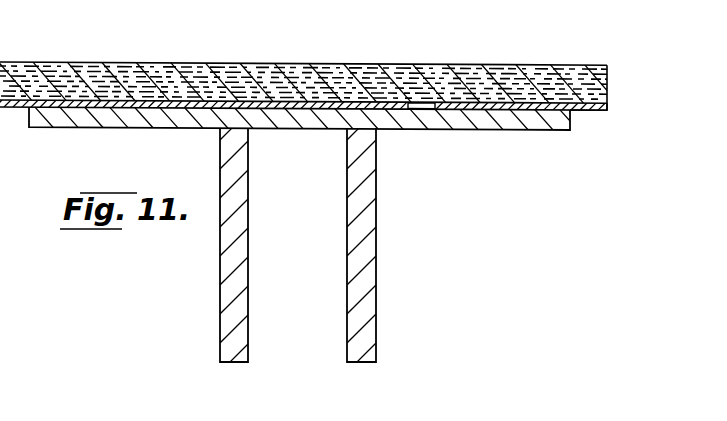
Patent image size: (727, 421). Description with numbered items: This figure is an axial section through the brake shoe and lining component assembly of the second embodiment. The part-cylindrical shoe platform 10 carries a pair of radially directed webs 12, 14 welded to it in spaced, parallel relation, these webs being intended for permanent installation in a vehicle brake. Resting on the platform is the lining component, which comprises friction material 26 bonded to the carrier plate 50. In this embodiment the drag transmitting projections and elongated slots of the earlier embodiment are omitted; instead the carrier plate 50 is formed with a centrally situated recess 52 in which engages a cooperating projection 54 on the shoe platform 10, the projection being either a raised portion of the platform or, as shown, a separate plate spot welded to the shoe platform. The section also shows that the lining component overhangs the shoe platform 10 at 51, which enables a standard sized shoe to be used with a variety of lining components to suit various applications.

The shoe platform 10 is at (507, 123).
The web 12 is at (232, 299).
The web 14 is at (363, 299).
The friction material 26 is at (243, 75).
The carrier plate 50 is at (595, 113).
The overhang 51 is at (607, 89).
The recess 52 is at (422, 107).
The projection 54 is at (320, 103).